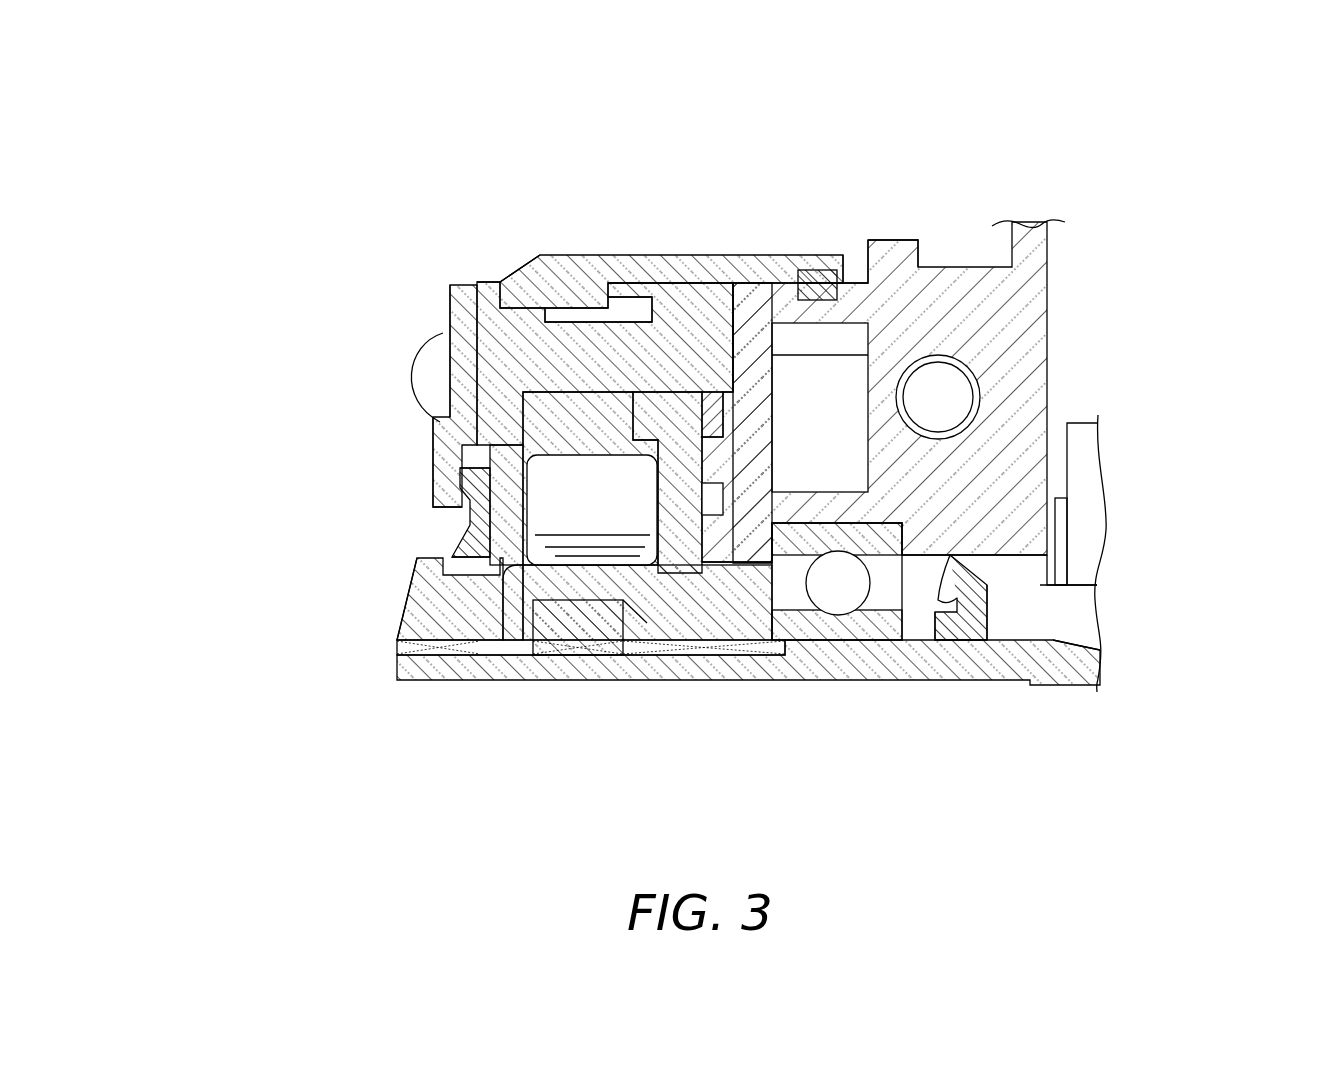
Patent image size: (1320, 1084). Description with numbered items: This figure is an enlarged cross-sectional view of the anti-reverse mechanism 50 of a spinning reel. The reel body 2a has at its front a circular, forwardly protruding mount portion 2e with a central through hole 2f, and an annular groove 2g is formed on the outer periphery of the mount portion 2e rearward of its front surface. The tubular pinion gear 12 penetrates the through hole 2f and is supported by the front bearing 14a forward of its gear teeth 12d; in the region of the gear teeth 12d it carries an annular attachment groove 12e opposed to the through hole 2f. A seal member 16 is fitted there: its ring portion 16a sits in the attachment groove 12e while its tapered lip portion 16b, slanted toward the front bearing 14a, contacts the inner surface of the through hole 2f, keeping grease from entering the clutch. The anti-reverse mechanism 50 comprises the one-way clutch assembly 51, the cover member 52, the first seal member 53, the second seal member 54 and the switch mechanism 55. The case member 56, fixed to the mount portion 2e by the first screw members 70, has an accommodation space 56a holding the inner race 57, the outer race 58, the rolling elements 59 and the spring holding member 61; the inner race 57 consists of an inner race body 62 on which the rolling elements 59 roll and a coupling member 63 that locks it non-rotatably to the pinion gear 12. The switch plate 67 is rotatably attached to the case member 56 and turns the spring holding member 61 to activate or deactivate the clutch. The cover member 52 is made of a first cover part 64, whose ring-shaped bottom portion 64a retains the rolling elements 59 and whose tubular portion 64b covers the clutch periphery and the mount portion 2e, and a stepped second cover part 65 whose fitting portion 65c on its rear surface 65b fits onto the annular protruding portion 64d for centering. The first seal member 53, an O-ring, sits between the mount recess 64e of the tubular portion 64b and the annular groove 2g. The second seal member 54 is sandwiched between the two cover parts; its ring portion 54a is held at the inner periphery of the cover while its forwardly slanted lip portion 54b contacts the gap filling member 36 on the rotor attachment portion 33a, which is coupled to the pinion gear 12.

The reel body 2a is at (1040, 215).
The mount portion 2e is at (860, 253).
The through hole 2f is at (915, 535).
The annular groove 2g is at (817, 283).
The pinion gear 12 is at (1083, 565).
The gear teeth 12d is at (1050, 527).
The attachment groove 12e is at (977, 612).
The front bearing 14a is at (812, 648).
The seal member 16 is at (880, 600).
The ring portion 16a is at (957, 627).
The lip portion 16b is at (933, 607).
The attachment portion 33a is at (410, 622).
The gap filling member 36 is at (418, 545).
The anti-reverse mechanism 50 is at (470, 650).
The one-way clutch assembly 51 is at (515, 268).
The cover member 52 is at (623, 253).
The first seal member 53 is at (818, 280).
The second seal member 54 is at (450, 525).
The ring portion 54a is at (472, 470).
The lip portion 54b is at (463, 553).
The switch mechanism 55 is at (776, 300).
The case member 56 is at (715, 390).
The accommodation space 56a is at (548, 305).
The inner race 57 is at (650, 655).
The outer race 58 is at (525, 410).
The rolling elements 59 is at (565, 505).
The spring holding member 61 is at (680, 407).
The inner race body 62 is at (500, 595).
The coupling member 63 is at (573, 625).
The first cover part 64 is at (718, 240).
The bottom portion 64a is at (475, 340).
The tubular portion 64b is at (727, 242).
The protruding portion 64d is at (473, 447).
The mount recess 64e is at (895, 240).
The second cover part 65 is at (456, 278).
The rear surface 65b is at (463, 337).
The fitting portion 65c is at (470, 432).
The switch plate 67 is at (718, 615).
The first screw members 70 is at (443, 333).